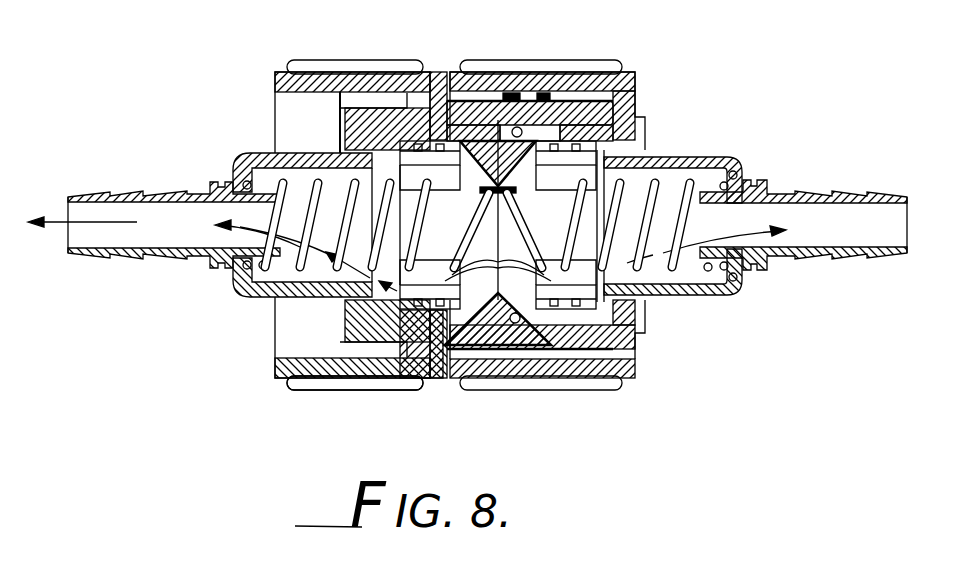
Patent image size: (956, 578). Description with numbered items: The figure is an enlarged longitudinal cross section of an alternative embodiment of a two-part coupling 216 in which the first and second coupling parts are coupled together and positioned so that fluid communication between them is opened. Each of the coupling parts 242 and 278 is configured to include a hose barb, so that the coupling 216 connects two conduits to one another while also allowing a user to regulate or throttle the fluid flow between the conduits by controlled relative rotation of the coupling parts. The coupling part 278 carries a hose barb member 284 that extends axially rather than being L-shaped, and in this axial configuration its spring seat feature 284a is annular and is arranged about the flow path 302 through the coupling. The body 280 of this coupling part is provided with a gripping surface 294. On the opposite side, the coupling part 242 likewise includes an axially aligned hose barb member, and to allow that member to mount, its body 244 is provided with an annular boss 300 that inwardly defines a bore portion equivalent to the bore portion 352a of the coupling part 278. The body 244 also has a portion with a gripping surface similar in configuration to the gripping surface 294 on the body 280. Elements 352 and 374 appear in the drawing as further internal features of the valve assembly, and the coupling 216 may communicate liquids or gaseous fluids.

The coupling 216 is at (355, 415).
The coupling part 242 is at (302, 392).
The body 244 is at (355, 110).
The coupling part 278 is at (622, 64).
The body 280 is at (600, 378).
The hose barb member 284 is at (718, 160).
The spring seat feature 284a is at (245, 150).
The gripping surface 294 is at (312, 76).
The annular boss 300 is at (340, 113).
The flow path 302 is at (62, 224).
The valve carrier 352 is at (452, 148).
The bore portion 352a is at (340, 297).
The spring 374 is at (657, 181).